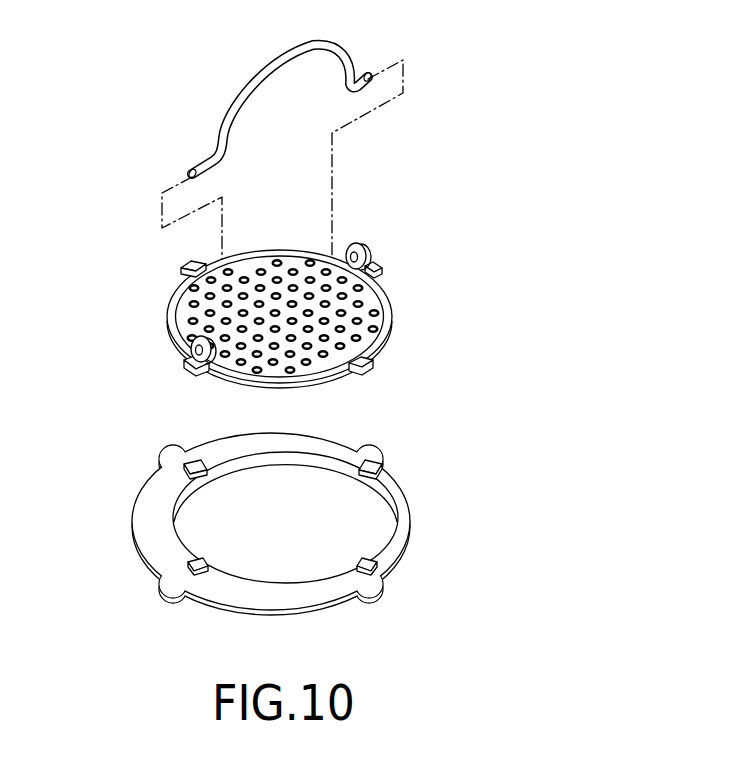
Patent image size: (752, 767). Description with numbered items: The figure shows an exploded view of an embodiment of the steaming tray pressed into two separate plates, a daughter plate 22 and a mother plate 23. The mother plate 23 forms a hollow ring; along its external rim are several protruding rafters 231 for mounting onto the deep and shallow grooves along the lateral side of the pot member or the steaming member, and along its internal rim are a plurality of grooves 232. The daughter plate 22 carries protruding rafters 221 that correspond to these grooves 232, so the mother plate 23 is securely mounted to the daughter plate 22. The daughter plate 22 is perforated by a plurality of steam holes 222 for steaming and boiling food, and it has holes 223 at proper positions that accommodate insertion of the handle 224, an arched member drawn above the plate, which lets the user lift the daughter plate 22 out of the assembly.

The daughter plate 22 is at (288, 299).
The protruding rafters 221 is at (180, 268).
The steam holes 222 is at (378, 321).
The holes 223 is at (367, 253).
The handle 224 is at (294, 53).
The mother plate 23 is at (347, 502).
The protruding rafters 231 is at (387, 457).
The grooves 232 is at (382, 466).